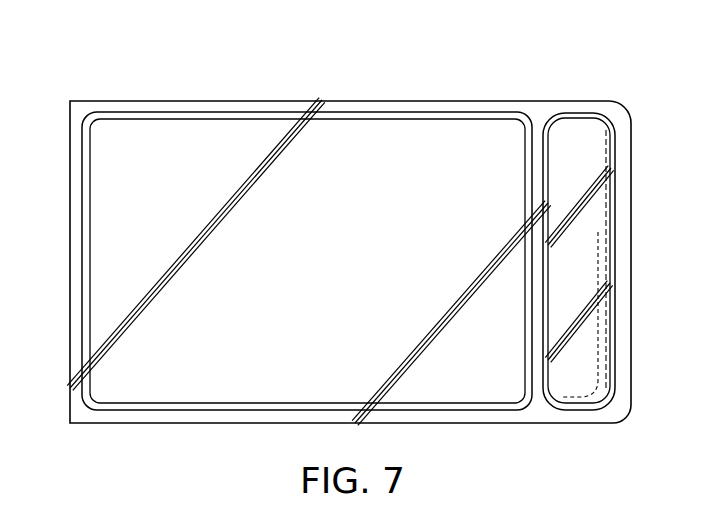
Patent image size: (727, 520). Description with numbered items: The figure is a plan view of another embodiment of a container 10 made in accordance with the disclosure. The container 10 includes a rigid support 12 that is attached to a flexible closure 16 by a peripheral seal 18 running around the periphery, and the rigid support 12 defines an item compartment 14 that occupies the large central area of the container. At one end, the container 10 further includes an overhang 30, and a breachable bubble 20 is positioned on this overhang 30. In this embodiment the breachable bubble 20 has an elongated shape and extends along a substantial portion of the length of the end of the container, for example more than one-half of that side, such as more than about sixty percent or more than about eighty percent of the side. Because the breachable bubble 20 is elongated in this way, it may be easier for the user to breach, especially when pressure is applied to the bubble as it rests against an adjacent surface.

The container 10 is at (120, 67).
The rigid support 12 is at (492, 410).
The item compartment 14 is at (378, 168).
The flexible closure 16 is at (98, 308).
The peripheral seal 18 is at (72, 247).
The breachable bubble 20 is at (605, 308).
The overhang 30 is at (617, 108).